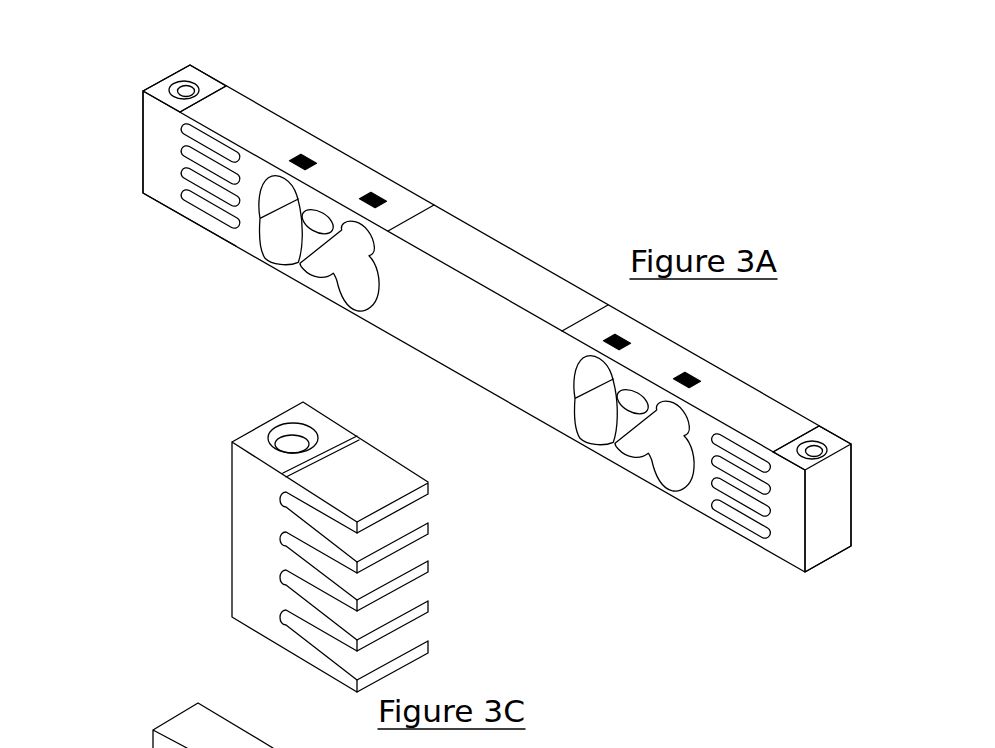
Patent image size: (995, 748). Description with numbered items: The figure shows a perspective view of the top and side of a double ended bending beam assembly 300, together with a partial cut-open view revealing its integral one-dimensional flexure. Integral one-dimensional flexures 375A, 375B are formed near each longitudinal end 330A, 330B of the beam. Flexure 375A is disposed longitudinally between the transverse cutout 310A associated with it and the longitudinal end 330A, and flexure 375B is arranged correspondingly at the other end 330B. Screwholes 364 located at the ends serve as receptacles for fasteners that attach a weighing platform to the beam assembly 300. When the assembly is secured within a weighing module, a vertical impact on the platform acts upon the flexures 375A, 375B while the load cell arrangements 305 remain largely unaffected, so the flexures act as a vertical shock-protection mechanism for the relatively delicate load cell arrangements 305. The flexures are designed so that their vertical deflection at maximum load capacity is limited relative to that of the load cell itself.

In FIG. 3A, the double ended bending beam assembly 300 is at (480, 164).
In FIG. 3A, the load cell arrangement 305 is at (415, 380).
In FIG. 3A, the transverse cutout 310A is at (275, 233).
In FIG. 3A, the longitudinal end 330A is at (100, 124).
In FIG. 3A, the longitudinal end 330B is at (828, 535).
In FIG. 3A, the screwhole 364 is at (188, 90).
In FIG. 3A, the one-dimensional flexure 375A is at (181, 255).
In FIG. 3C, the one-dimensional flexure 375A is at (308, 694).
In FIG. 3A, the one-dimensional flexure 375B is at (725, 557).